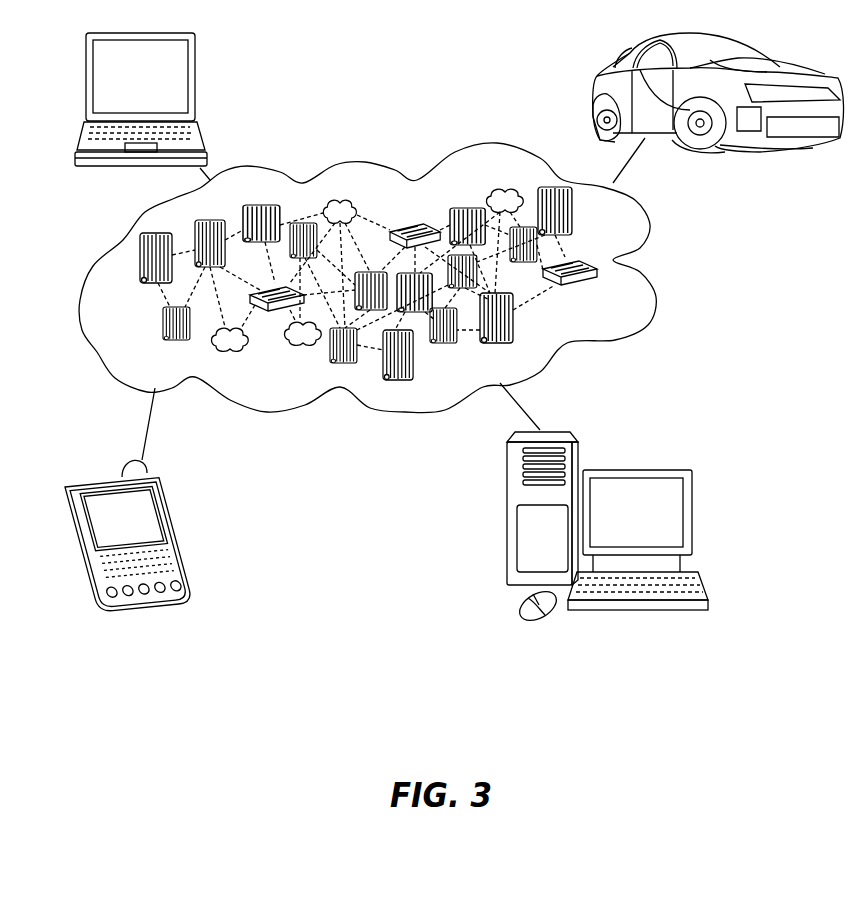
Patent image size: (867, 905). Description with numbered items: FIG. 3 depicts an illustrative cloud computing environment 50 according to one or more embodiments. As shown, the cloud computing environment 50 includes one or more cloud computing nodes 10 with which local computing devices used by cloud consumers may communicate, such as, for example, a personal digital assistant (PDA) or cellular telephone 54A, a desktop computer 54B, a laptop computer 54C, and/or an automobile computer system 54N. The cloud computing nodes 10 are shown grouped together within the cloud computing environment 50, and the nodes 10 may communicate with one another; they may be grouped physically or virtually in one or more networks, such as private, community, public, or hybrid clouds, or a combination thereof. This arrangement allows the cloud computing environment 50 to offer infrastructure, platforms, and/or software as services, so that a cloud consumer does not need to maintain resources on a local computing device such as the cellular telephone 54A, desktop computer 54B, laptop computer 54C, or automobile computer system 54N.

The cloud computing nodes 10 is at (612, 306).
The cloud computing environment 50 is at (653, 220).
The personal digital assistant (PDA) or cellular telephone 54A is at (170, 512).
The desktop computer 54B is at (693, 512).
The laptop computer 54C is at (195, 80).
The automobile computer system 54N is at (747, 52).